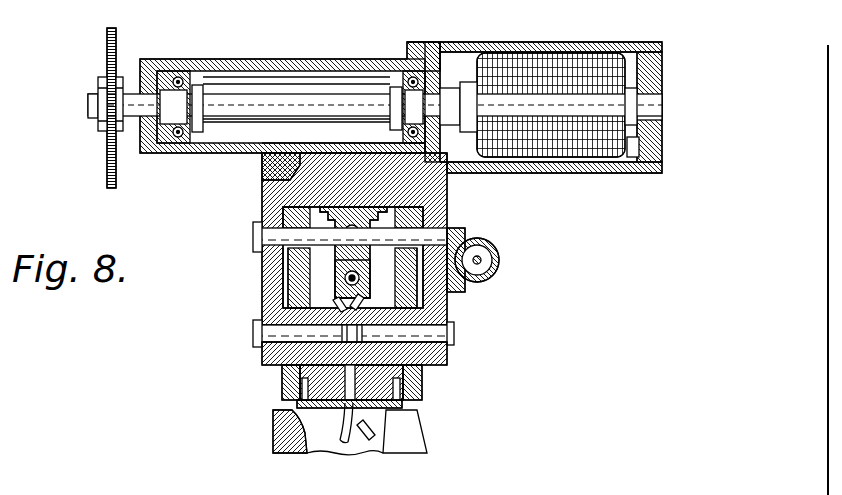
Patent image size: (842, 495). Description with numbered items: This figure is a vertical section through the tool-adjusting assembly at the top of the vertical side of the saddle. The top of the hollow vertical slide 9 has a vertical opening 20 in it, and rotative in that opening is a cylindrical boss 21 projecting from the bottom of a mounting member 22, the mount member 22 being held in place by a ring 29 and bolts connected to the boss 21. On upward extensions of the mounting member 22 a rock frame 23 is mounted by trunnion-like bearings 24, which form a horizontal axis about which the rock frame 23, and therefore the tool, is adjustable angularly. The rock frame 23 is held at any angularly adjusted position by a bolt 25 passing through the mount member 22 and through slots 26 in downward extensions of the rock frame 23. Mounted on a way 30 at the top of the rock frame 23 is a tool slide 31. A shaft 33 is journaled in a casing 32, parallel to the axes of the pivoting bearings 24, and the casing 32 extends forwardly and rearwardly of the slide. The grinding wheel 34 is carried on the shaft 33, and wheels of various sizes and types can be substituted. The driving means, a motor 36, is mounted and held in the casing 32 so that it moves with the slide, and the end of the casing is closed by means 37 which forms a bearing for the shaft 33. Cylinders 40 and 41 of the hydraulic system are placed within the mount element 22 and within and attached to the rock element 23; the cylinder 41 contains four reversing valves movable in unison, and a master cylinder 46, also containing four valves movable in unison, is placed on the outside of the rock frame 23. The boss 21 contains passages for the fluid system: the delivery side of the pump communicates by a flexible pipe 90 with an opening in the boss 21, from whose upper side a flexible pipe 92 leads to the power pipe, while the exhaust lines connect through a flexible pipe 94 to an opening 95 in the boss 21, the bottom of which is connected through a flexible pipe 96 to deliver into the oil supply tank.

The hollow vertical slide 9 is at (370, 445).
The vertical opening 20 is at (423, 377).
The cylindrical boss 21 is at (282, 378).
The mounting member 22 is at (447, 303).
The rock frame 23 is at (262, 198).
The trunnion-like bearings 24 is at (253, 238).
The bolt 25 is at (268, 332).
The slots 26 is at (283, 312).
The ring 29 is at (383, 443).
The way 30 is at (355, 157).
The tool slide 31 is at (262, 167).
The casing 32 is at (253, 60).
The shaft 33 is at (293, 103).
The grinding wheel 34 is at (107, 168).
The motor 36 is at (533, 63).
The end closure 37 is at (663, 57).
The cylinder 40 is at (445, 196).
The cylinder 41 is at (365, 270).
The master cylinder 46 is at (500, 252).
The flexible pipe 90 is at (366, 435).
The flexible pipe 92 is at (360, 305).
The flexible pipe 94 is at (338, 305).
The opening 95 is at (342, 367).
The flexible pipe 96 is at (343, 433).